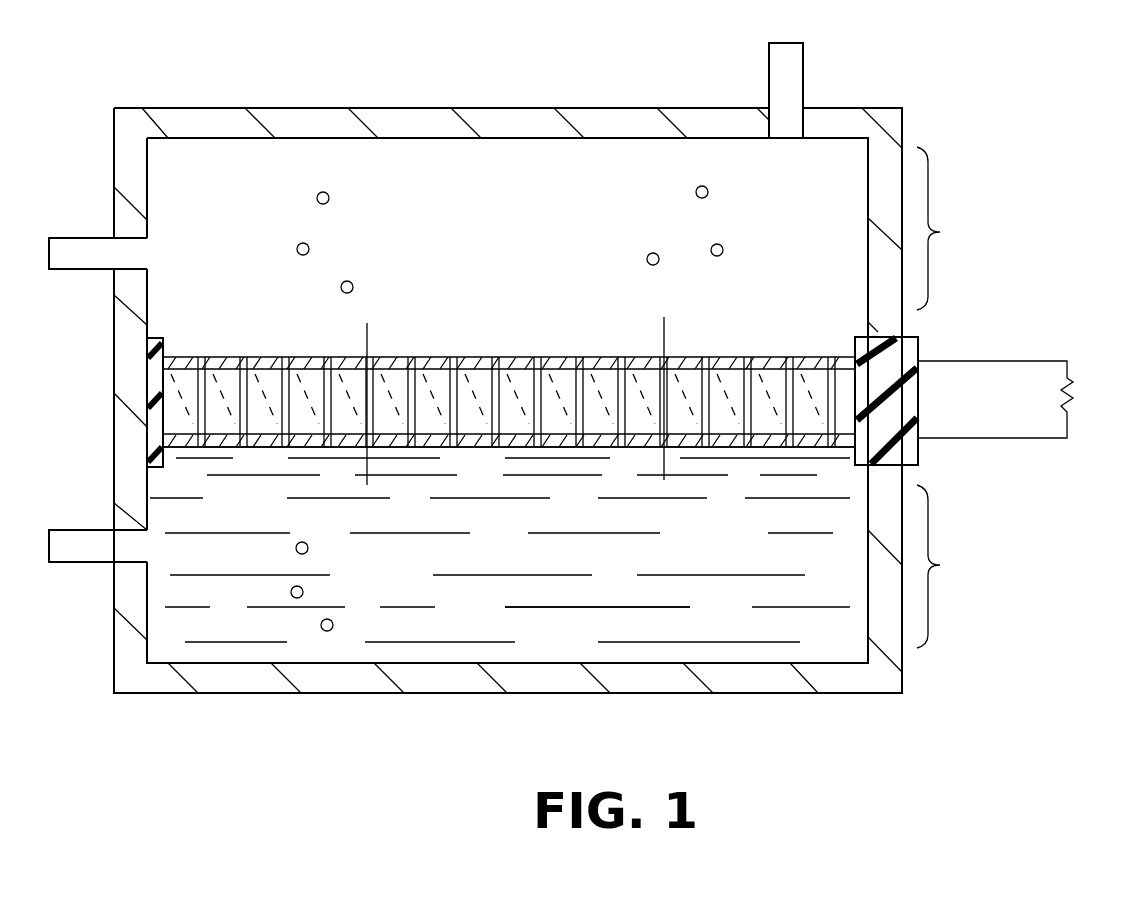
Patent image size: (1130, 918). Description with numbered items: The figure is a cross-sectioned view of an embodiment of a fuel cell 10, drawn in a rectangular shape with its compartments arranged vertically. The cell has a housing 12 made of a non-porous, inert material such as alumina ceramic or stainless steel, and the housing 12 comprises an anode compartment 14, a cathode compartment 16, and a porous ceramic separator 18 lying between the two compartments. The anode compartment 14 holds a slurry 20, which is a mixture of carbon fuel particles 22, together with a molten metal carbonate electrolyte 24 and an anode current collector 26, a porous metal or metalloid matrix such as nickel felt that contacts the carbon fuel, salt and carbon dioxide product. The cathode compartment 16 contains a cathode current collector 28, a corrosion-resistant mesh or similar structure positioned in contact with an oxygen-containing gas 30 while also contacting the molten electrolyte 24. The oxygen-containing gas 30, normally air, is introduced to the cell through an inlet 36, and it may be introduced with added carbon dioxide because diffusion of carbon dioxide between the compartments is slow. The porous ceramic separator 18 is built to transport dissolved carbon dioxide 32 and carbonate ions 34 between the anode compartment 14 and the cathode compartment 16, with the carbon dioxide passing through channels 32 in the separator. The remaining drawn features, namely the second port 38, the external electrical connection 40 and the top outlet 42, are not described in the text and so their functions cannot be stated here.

The fuel cell 10 is at (952, 73).
The housing 12 is at (580, 108).
The anode compartment 14 is at (953, 566).
The cathode compartment 16 is at (946, 228).
The porous ceramic separator 18 is at (478, 395).
The slurry 20 is at (500, 550).
The carbon fuel particles 22 is at (333, 619).
The electrolyte 24 is at (517, 693).
The anode current collector 26 is at (268, 447).
The cathode current collector 28 is at (262, 357).
The oxygen-containing gas 30 is at (347, 281).
The dissolved CO2 32 is at (672, 342).
The carbonate ions 34 is at (367, 336).
The inlet 36 is at (89, 238).
The liquid inlet pipe 38 is at (89, 530).
The electrical lead with resistor 40 is at (1069, 390).
The top outlet pipe 42 is at (803, 75).